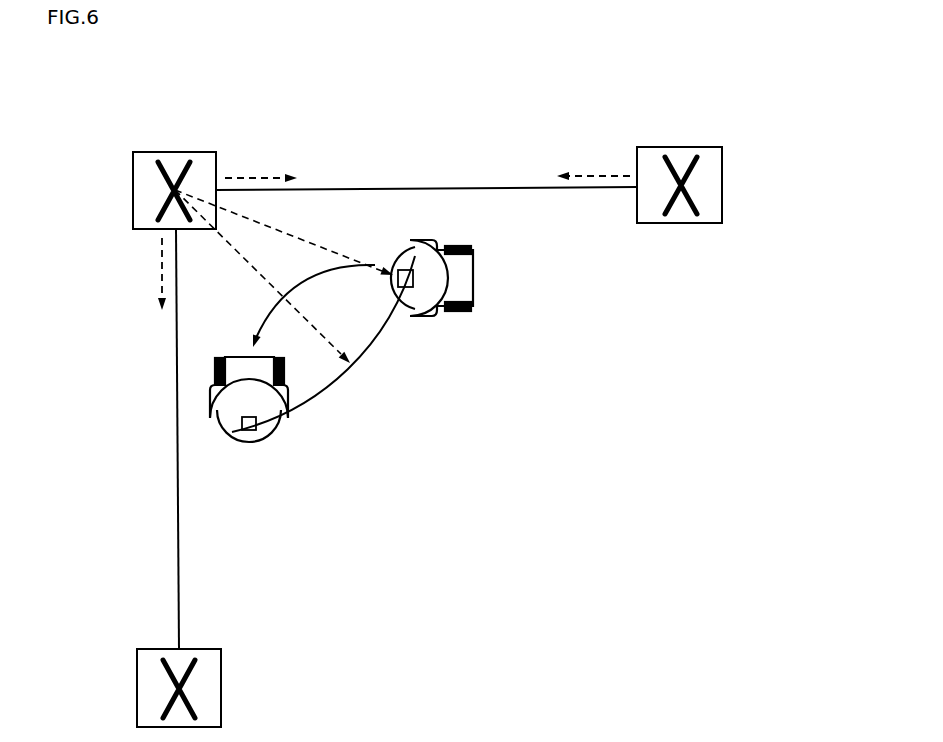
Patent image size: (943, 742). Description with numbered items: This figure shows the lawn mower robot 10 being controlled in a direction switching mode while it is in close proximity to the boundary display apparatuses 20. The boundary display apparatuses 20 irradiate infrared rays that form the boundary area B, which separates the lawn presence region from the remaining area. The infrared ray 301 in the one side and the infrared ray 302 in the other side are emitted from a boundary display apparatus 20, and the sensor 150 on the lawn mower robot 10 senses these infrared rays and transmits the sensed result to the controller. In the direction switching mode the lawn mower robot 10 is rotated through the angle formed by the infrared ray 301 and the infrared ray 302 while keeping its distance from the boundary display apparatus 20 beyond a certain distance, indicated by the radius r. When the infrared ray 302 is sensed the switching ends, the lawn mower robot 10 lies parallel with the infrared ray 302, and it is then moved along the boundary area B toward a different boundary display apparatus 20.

The boundary display apparatus 20 is at (133, 188).
The lawn mower robot 10 is at (492, 310).
The sensor 150 is at (413, 278).
The infrared ray in the other side 302 is at (262, 178).
The infrared ray in the one side 301 is at (162, 265).
The boundary area B is at (543, 186).
The radius from beacon to robot r is at (295, 311).